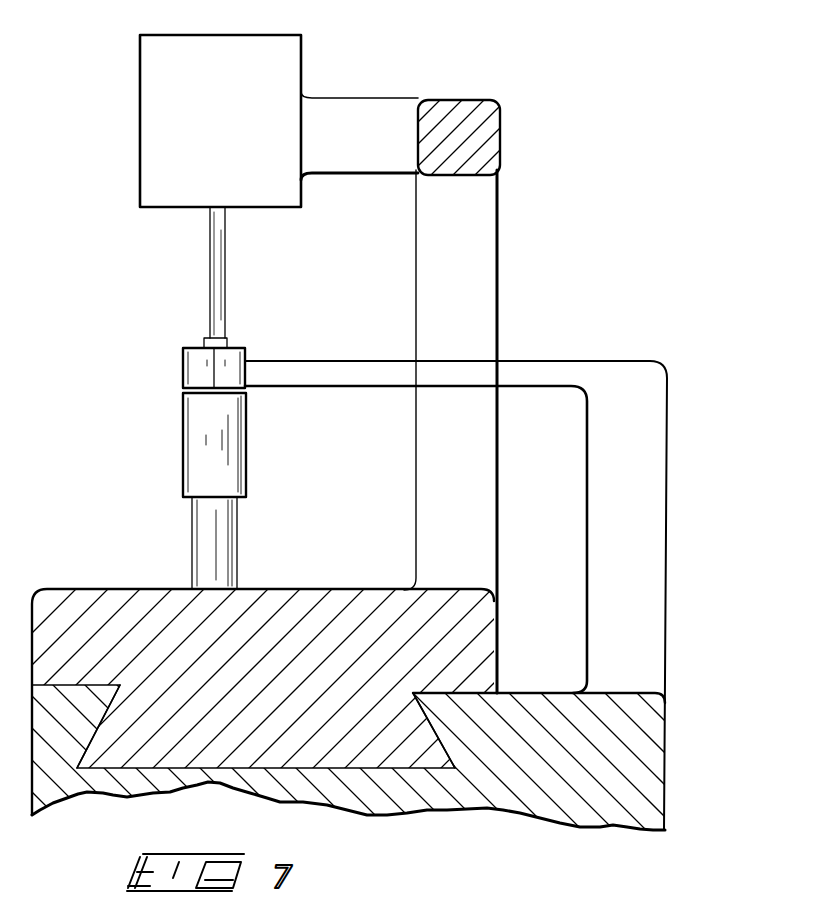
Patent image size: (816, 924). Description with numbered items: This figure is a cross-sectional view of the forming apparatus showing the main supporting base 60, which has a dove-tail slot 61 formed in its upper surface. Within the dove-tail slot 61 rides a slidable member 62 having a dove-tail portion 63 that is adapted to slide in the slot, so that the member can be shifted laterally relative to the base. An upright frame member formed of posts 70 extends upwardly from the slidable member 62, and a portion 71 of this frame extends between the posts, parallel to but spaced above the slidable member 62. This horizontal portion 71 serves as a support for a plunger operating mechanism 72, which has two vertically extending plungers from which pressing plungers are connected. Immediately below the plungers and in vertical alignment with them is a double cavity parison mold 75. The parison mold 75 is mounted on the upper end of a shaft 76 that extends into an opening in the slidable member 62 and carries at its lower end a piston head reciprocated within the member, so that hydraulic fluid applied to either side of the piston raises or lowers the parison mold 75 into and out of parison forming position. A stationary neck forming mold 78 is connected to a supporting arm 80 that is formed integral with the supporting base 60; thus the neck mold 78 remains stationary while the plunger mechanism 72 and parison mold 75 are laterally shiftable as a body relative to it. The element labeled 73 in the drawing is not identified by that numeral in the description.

The main supporting base 60 is at (645, 762).
The dove-tail slot 61 is at (442, 748).
The slidable member 62 is at (50, 597).
The dove-tail portion 63 is at (152, 750).
The posts 70 is at (487, 278).
The horizontal portion 71 is at (484, 130).
The plunger operating mechanism 72 is at (280, 55).
The rod 73 is at (217, 272).
The double cavity parison mold 75 is at (222, 450).
The shaft 76 is at (215, 548).
The stationary neck forming mold 78 is at (178, 372).
The supporting arm 80 is at (300, 367).